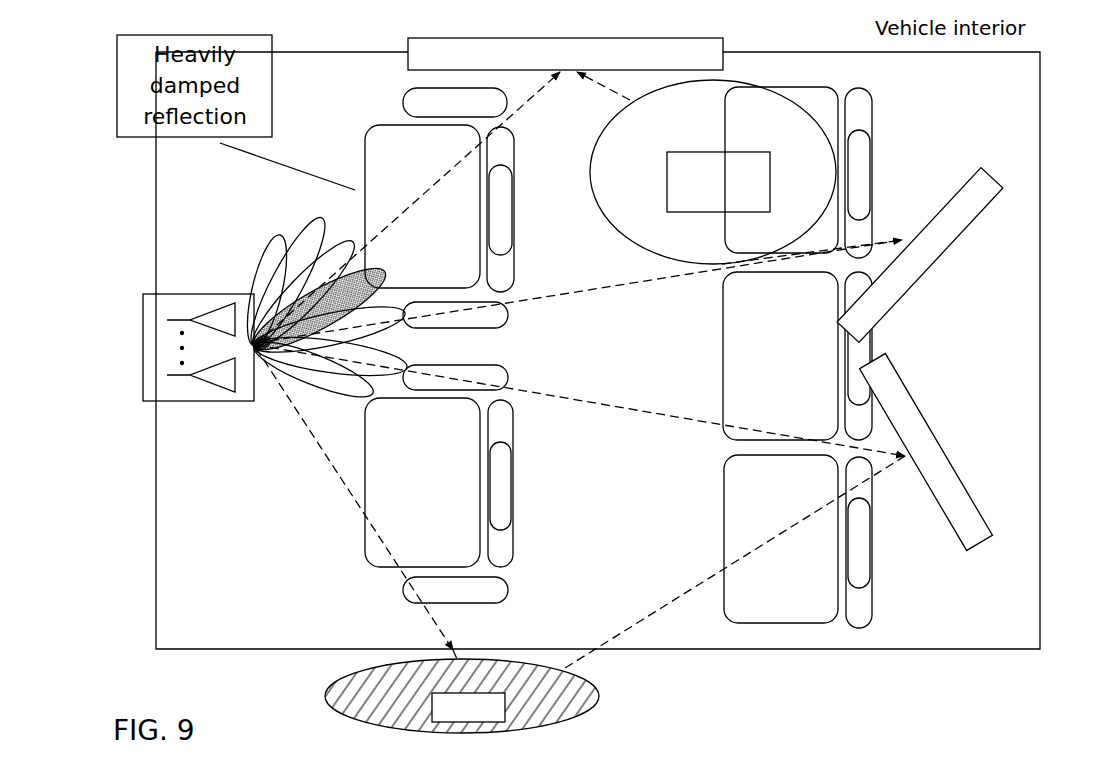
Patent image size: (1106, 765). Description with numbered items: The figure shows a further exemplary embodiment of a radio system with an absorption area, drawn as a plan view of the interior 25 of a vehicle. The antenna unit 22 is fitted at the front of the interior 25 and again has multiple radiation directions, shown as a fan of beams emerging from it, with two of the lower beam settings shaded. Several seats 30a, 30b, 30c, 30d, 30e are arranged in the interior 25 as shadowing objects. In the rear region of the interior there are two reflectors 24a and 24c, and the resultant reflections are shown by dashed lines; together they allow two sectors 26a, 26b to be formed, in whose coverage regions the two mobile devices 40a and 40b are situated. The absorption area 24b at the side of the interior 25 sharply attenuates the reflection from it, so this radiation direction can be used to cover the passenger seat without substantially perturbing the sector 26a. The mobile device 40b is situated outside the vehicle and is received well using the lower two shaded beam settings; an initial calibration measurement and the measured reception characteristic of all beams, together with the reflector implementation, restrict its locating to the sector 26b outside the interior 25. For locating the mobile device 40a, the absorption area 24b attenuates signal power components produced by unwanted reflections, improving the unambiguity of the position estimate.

The antenna unit 22 is at (196, 294).
The reflector 24a is at (985, 198).
The absorption area 24b is at (458, 43).
The reflector 24c is at (973, 513).
The interior of a vehicle 25 is at (1038, 503).
The sector 26a is at (620, 235).
The sector 26b is at (592, 695).
The seat 30a is at (512, 205).
The seat 30b is at (512, 480).
The seat 30c is at (869, 124).
The seat 30d is at (868, 350).
The seat 30e is at (870, 573).
The mobile device 40a is at (768, 183).
The mobile device 40b is at (437, 706).